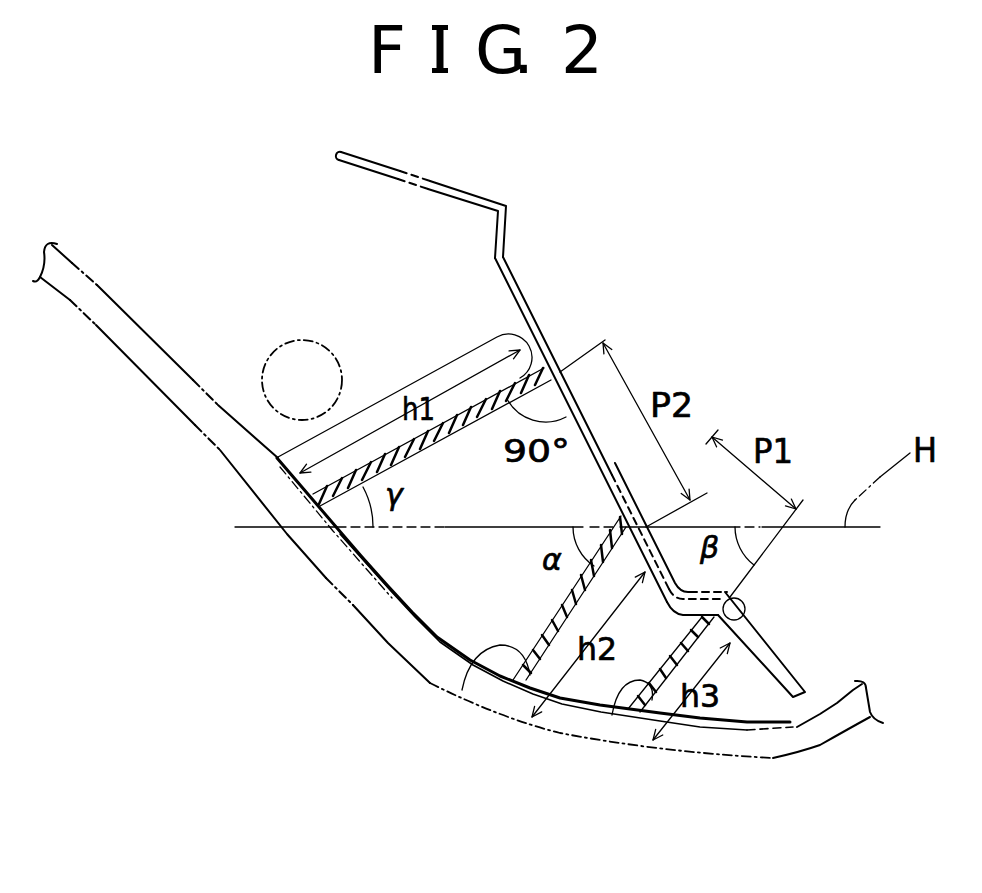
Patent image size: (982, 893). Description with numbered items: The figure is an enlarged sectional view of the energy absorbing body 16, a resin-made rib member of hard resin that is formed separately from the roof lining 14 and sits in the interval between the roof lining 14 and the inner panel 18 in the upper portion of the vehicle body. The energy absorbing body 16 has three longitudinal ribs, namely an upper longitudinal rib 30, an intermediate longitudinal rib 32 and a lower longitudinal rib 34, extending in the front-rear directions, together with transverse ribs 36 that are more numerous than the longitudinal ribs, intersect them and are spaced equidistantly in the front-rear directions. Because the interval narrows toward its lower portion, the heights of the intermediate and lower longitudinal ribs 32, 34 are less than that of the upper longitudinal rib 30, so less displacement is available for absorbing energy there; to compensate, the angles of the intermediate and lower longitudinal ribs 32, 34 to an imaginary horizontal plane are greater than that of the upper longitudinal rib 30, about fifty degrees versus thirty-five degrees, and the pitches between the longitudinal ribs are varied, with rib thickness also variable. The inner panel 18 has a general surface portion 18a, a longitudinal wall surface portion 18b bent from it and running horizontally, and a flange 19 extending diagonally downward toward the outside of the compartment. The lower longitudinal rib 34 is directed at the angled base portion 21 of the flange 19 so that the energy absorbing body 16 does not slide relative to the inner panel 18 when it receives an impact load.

The roof lining 14 is at (143, 343).
The energy absorbing body 16 is at (437, 650).
The inner panel 18 is at (653, 365).
The general surface portion 18a is at (558, 350).
The longitudinal wall surface portion 18b is at (723, 587).
The flange 19 is at (788, 675).
The base portion 21 is at (746, 625).
The upper longitudinal rib 30 is at (440, 440).
The intermediate longitudinal rib 32 is at (533, 642).
The lower longitudinal rib 34 is at (637, 684).
The transverse ribs 36 is at (407, 583).